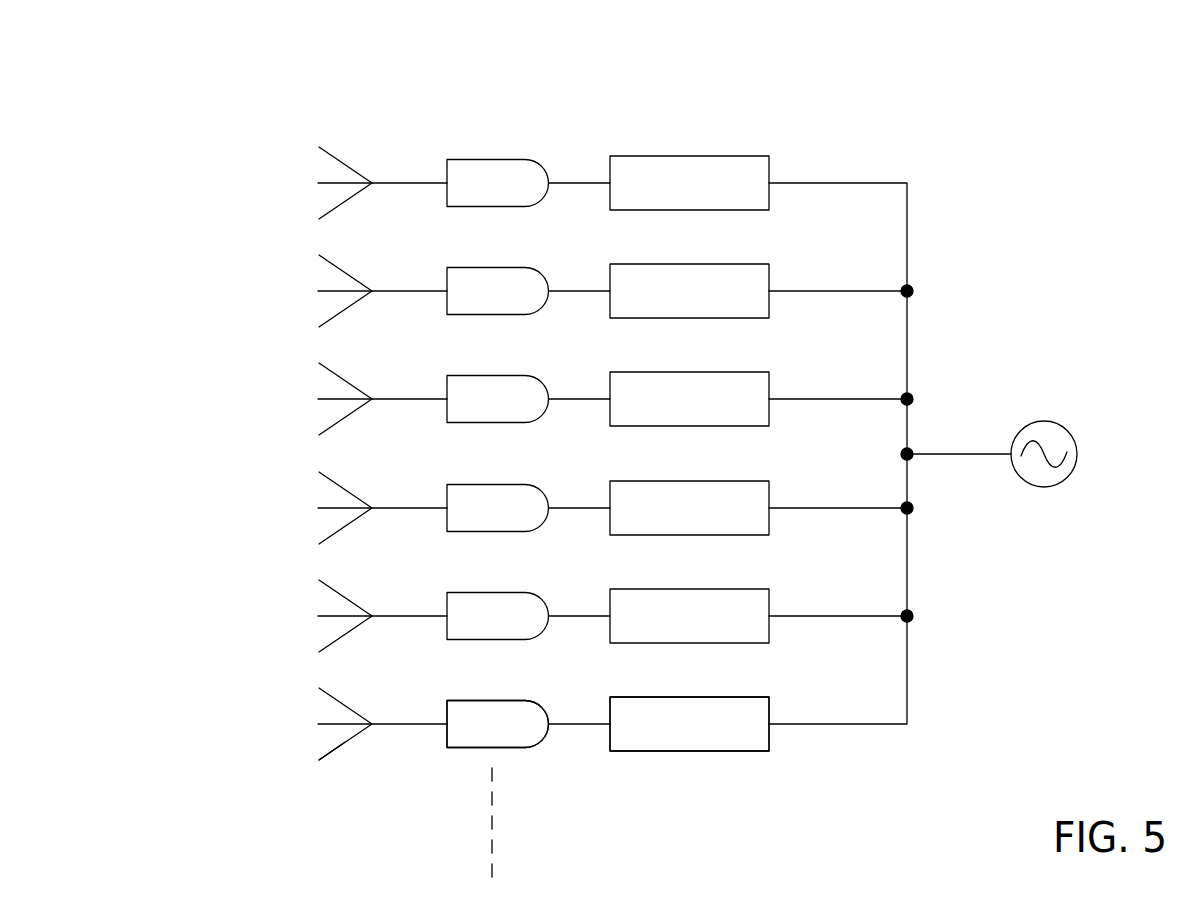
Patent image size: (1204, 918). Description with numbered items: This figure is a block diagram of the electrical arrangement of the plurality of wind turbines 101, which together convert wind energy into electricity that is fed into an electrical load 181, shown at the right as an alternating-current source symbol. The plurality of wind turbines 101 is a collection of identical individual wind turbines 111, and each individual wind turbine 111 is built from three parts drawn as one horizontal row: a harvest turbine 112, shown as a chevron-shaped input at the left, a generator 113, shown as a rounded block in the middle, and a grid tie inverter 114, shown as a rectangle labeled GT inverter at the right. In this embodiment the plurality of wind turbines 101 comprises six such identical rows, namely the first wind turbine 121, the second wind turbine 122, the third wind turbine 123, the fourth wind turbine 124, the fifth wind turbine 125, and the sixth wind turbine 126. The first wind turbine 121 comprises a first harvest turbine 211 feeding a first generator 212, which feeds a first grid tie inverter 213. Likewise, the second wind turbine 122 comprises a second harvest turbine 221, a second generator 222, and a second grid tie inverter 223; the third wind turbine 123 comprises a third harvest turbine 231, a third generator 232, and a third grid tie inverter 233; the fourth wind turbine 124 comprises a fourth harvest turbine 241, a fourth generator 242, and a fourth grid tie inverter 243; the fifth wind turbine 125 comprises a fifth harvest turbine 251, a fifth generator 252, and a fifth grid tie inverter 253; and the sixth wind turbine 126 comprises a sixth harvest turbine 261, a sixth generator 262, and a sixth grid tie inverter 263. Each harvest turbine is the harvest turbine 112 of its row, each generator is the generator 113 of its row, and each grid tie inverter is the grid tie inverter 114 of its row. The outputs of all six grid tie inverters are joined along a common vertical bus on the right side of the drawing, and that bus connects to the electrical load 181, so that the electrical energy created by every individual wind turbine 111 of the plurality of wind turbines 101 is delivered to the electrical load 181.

The plurality of wind turbines 101 is at (1010, 138).
The individual wind turbine 111 is at (769, 164).
The harvest turbine 112 is at (347, 768).
The generator 113 is at (520, 748).
The grid tie inverter 114 is at (690, 752).
The first wind turbine 121 is at (319, 147).
The second wind turbine 122 is at (319, 255).
The third wind turbine 123 is at (319, 363).
The fourth wind turbine 124 is at (319, 472).
The fifth wind turbine 125 is at (319, 580).
The sixth wind turbine 126 is at (319, 688).
The electrical load 181 is at (1077, 454).
The first harvest turbine 211 is at (318, 183).
The first generator 212 is at (493, 159).
The first grid tie inverter 213 is at (668, 156).
The second harvest turbine 221 is at (318, 291).
The second generator 222 is at (487, 267).
The second grid tie inverter 223 is at (710, 264).
The third harvest turbine 231 is at (318, 399).
The third generator 232 is at (482, 376).
The third grid tie inverter 233 is at (744, 372).
The fourth harvest turbine 241 is at (318, 508).
The fourth generator 242 is at (482, 485).
The fourth grid tie inverter 243 is at (748, 481).
The fifth harvest turbine 251 is at (318, 616).
The fifth generator 252 is at (489, 592).
The fifth grid tie inverter 253 is at (747, 589).
The sixth harvest turbine 261 is at (318, 724).
The sixth generator 262 is at (490, 700).
The sixth grid tie inverter 263 is at (720, 697).